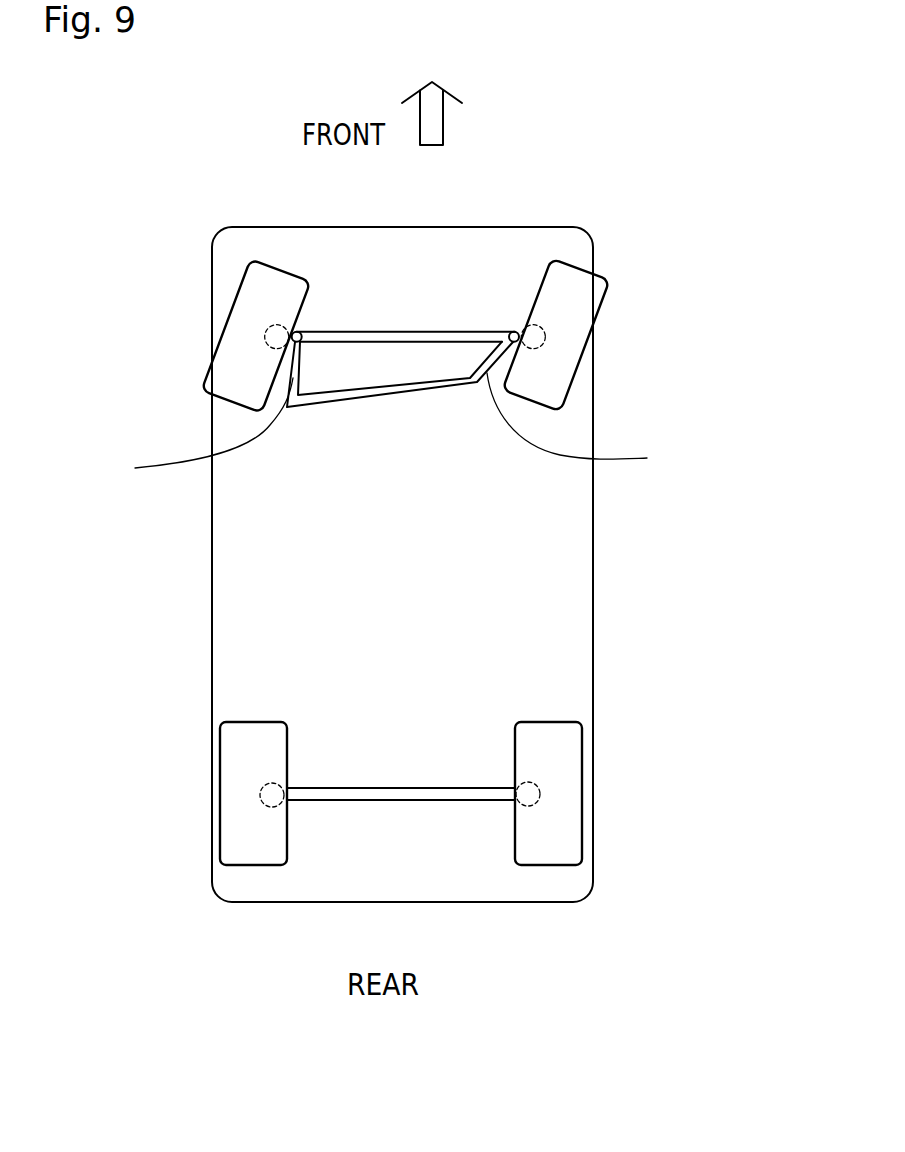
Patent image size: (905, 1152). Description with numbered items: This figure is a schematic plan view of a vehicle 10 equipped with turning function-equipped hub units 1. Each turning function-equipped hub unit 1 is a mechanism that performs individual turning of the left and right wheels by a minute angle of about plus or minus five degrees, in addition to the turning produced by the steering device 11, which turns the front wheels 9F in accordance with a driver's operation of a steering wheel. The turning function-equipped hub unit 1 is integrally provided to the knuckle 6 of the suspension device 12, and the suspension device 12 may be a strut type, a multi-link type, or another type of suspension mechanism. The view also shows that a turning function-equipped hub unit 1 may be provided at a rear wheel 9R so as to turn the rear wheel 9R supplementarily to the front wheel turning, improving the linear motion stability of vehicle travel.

The turning function-equipped hub unit 1 is at (258, 342).
The knuckle 6 is at (392, 429).
The front wheels 9F is at (667, 240).
The rear wheel 9R is at (655, 873).
The vehicle 10 is at (597, 560).
The steering device 11 is at (370, 402).
The suspension device 12 is at (413, 322).